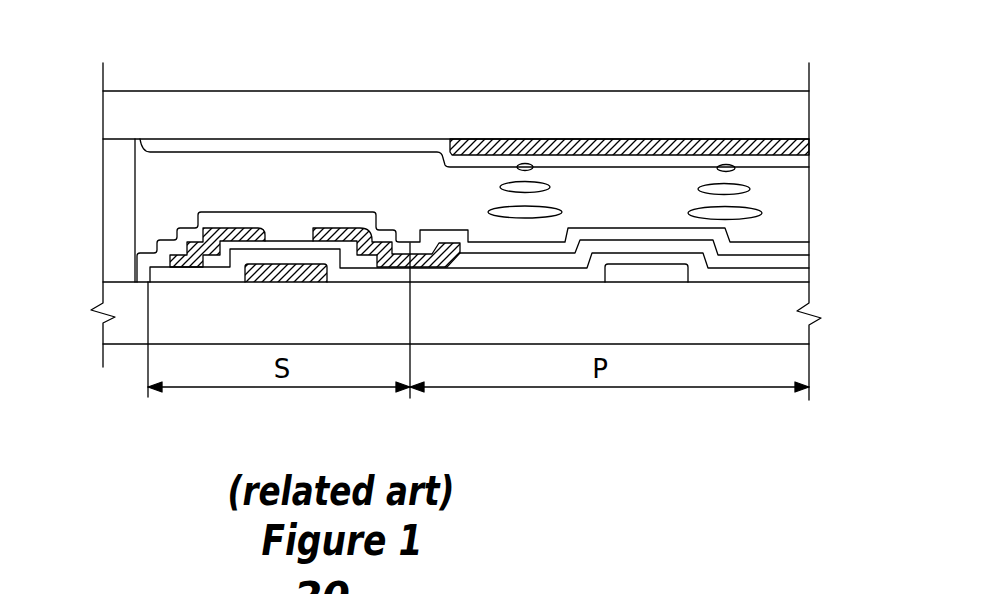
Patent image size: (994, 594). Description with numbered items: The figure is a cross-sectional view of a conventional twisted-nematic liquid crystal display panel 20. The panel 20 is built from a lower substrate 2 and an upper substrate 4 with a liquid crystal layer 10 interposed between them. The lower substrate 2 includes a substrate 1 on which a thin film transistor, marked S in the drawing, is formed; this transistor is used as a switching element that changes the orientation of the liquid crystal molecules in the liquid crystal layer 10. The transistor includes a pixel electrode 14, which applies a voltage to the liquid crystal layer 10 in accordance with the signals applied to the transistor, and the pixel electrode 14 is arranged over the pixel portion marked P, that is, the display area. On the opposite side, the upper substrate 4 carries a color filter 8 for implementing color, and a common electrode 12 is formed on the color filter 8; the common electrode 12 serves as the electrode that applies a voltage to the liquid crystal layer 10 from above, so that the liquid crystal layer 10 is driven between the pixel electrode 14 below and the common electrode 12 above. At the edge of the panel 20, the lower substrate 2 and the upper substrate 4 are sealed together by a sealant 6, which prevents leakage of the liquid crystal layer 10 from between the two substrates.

The liquid crystal display panel 20 is at (282, 79).
The substrate 1 is at (486, 218).
The upper substrate 4 is at (822, 90).
The lower substrate 2 is at (822, 243).
The color filter 8 is at (670, 140).
The common electrode 12 is at (780, 163).
The sealant 6 is at (111, 207).
The liquid crystal layer 10 is at (822, 167).
The pixel electrode 14 is at (798, 260).